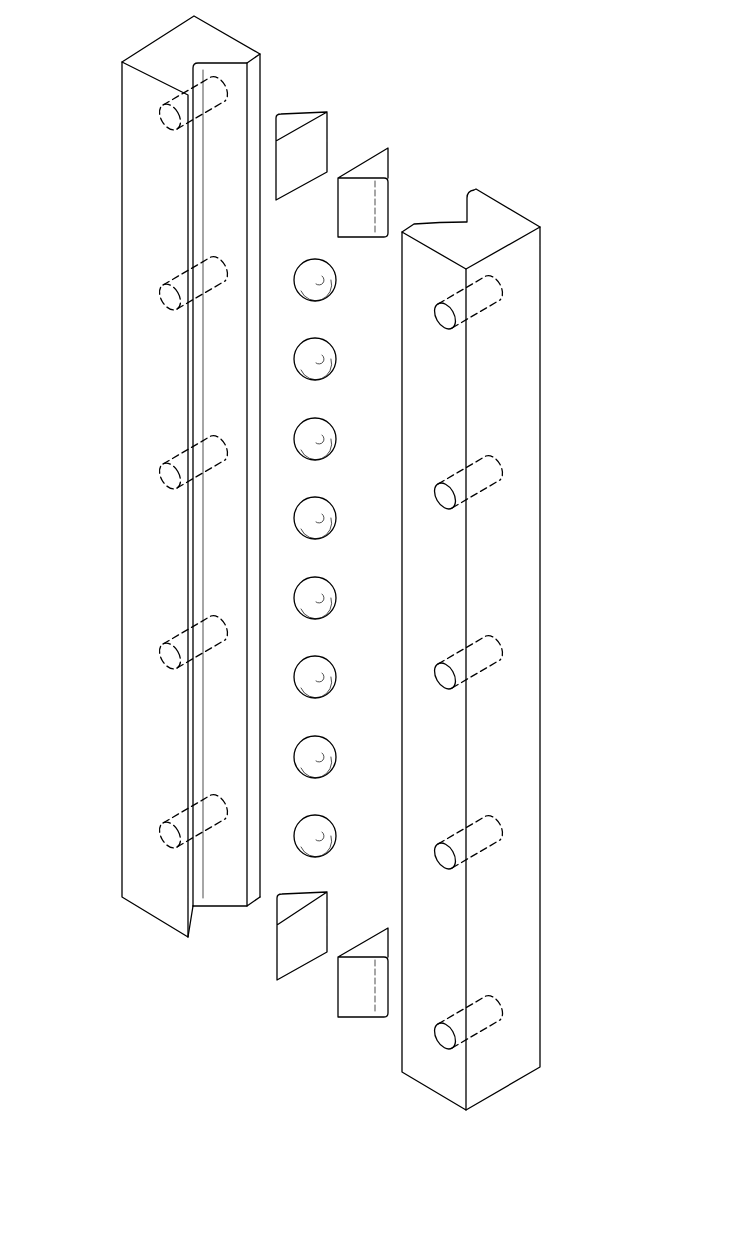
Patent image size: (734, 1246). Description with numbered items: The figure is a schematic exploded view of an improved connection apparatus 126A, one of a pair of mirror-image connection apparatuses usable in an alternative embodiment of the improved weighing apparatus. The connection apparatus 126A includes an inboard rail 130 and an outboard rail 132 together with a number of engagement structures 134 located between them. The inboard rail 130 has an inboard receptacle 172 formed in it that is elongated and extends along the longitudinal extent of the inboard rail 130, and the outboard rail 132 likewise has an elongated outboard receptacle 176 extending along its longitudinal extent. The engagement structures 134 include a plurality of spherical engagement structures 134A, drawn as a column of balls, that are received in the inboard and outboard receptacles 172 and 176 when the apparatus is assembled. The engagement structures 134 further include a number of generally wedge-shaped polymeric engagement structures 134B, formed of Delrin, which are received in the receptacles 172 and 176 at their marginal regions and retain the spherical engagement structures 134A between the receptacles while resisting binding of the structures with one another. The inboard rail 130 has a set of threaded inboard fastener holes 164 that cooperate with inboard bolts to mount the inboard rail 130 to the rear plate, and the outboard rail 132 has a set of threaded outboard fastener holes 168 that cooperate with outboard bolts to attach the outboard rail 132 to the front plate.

The connection apparatus 126A is at (496, 114).
The inboard rail 130 is at (530, 332).
The outboard rail 132 is at (128, 206).
The engagement structures 134 is at (383, 162).
The spherical engagement structures 134A is at (298, 436).
The polymeric engagement structures 134B is at (300, 116).
The inboard fastener holes 164 is at (438, 326).
The outboard fastener holes 168 is at (162, 121).
The inboard receptacle 172 is at (467, 205).
The outboard receptacle 176 is at (234, 76).